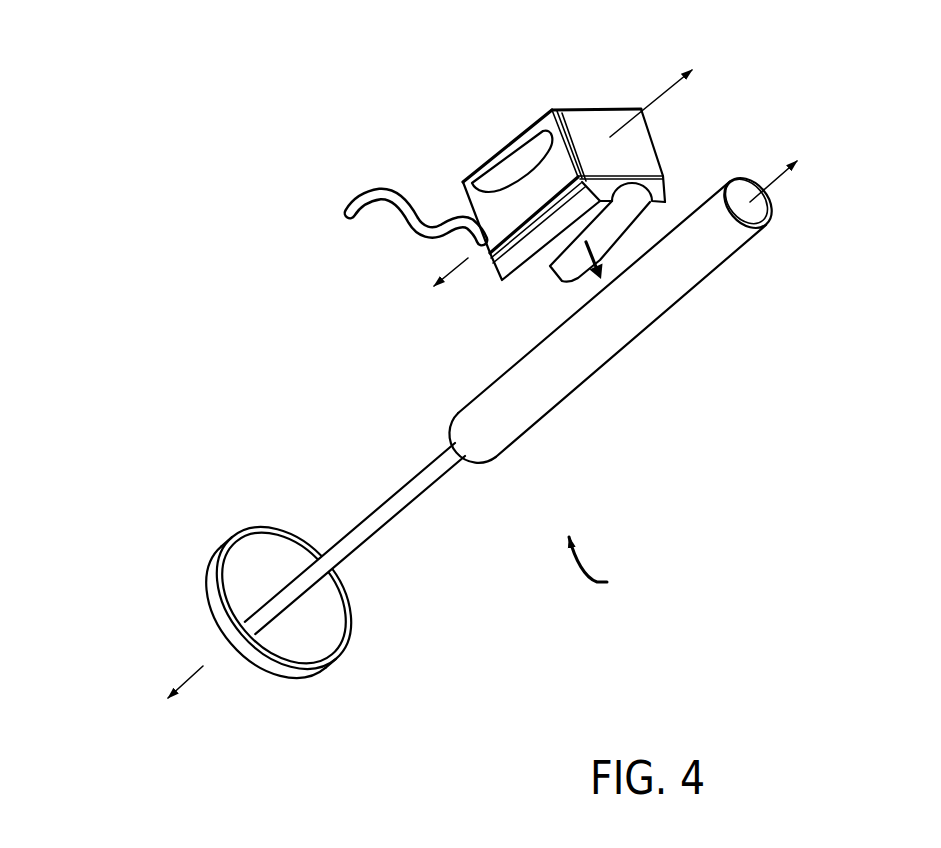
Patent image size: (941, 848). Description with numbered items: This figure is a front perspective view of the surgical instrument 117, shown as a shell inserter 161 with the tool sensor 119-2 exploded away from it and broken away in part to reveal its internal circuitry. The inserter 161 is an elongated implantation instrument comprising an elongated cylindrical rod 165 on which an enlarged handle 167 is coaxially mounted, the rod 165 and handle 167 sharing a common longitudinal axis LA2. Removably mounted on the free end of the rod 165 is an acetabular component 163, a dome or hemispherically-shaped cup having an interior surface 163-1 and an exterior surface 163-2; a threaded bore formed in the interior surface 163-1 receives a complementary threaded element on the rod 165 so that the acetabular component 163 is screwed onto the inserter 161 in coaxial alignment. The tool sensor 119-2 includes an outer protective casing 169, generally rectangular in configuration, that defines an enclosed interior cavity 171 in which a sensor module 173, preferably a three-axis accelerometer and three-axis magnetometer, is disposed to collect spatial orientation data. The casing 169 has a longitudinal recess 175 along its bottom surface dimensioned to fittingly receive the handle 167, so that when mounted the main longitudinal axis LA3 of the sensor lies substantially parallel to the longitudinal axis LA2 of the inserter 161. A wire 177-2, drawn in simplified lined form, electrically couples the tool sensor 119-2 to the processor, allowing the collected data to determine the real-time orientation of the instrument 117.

The surgical instrument 117 is at (611, 571).
The tool sensor 119-2 is at (556, 167).
The shell inserter 161 is at (732, 263).
The acetabular component 163 is at (241, 615).
The interior surface 163-1 is at (334, 632).
The exterior surface 163-2 is at (288, 678).
The cylindrical rod 165 is at (421, 488).
The handle 167 is at (575, 378).
The outer protective casing 169 is at (650, 158).
The interior cavity 171 is at (488, 166).
The sensor module 173 is at (526, 164).
The longitudinal recess 175 is at (536, 283).
The wire 177-2 is at (363, 190).
The longitudinal axis LA2 is at (785, 176).
The main longitudinal axis LA3 is at (658, 92).